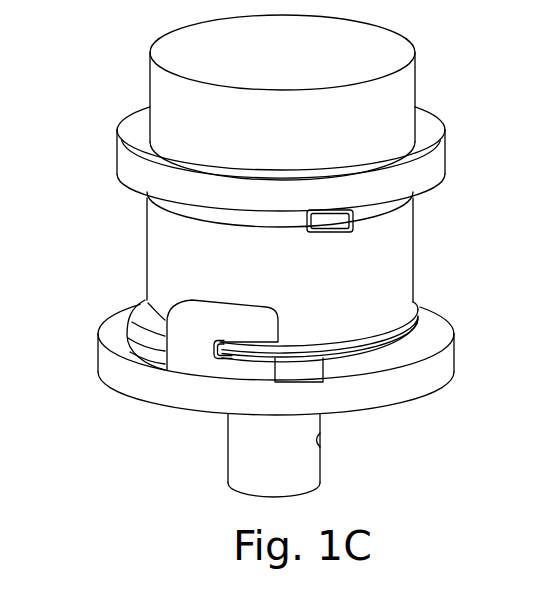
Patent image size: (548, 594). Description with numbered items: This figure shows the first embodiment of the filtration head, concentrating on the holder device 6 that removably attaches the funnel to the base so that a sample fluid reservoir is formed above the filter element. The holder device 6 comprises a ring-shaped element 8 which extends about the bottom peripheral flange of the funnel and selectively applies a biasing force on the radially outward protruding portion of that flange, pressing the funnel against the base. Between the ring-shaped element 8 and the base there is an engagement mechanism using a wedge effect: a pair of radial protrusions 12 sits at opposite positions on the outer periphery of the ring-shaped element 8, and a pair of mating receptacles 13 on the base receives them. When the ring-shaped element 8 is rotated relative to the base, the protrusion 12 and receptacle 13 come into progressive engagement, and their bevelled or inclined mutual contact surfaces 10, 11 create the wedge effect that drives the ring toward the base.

The holder device 6 is at (193, 323).
The ring-shaped element 8 is at (377, 191).
The inclined contact surface 10 is at (258, 350).
The inclined contact surface 11 is at (340, 215).
The radial protrusion 12 is at (330, 227).
The mating receptacle 13 is at (242, 350).